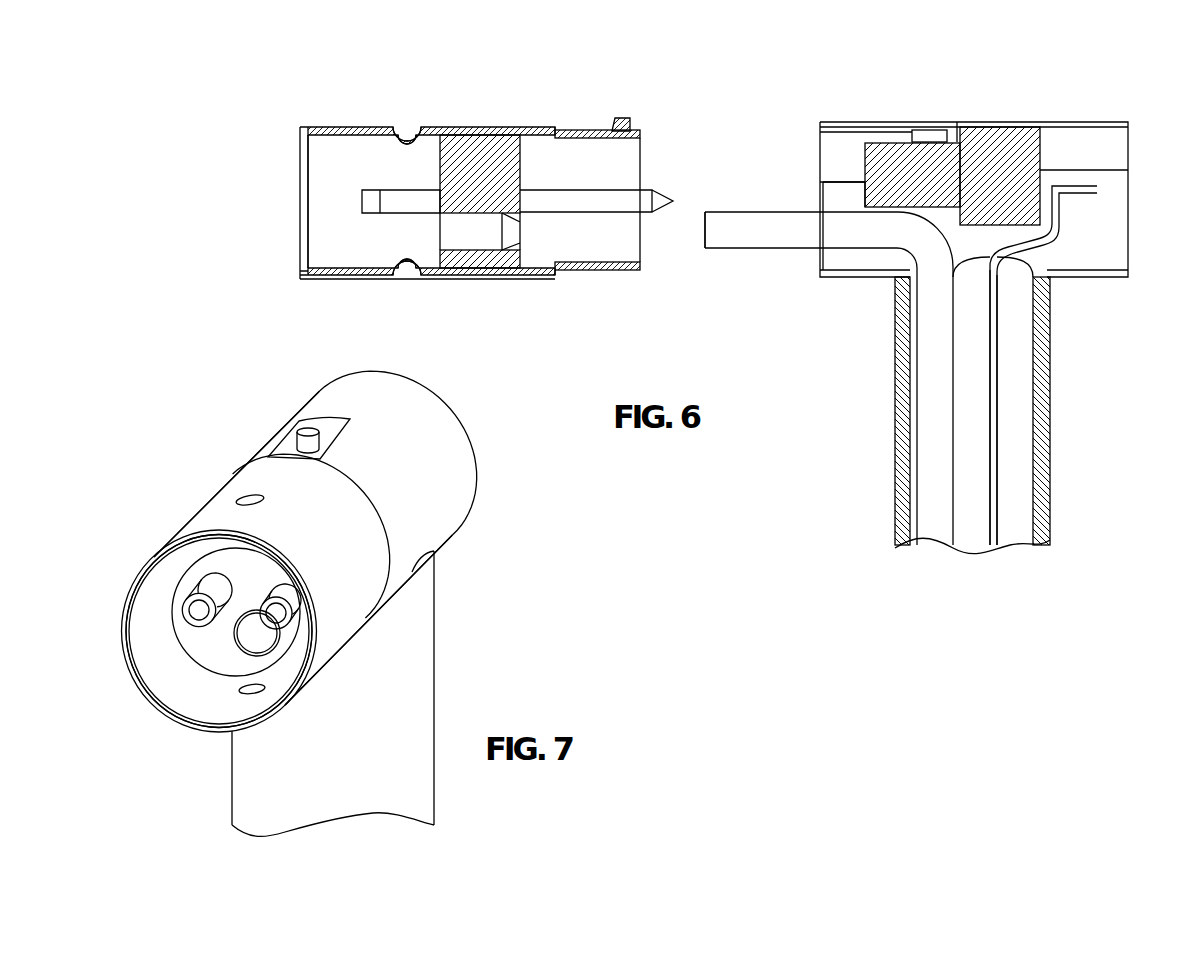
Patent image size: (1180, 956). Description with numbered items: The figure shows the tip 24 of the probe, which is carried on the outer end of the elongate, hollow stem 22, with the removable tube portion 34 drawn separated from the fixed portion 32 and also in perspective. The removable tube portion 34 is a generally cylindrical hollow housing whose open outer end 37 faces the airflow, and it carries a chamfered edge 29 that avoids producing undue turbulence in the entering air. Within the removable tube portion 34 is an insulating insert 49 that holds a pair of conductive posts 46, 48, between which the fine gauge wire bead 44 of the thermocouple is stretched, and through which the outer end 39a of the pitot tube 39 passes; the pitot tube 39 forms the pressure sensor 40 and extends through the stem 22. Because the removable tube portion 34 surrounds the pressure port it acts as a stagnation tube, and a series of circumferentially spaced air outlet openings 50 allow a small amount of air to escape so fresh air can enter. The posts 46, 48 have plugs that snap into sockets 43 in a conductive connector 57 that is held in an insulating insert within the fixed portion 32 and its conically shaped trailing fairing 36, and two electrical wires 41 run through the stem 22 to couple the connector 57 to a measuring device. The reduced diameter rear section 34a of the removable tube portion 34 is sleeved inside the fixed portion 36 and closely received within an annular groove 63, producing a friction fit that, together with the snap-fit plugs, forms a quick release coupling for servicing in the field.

In FIG. 6, the stem 22 is at (1013, 382).
In FIG. 7, the stem 22 is at (402, 782).
In FIG. 7, the tip 24 is at (172, 463).
In FIG. 7, the chamfered edge 29 is at (137, 633).
In FIG. 7, the fixed portion 32 is at (427, 484).
In FIG. 6, the removable tube portion 34 is at (335, 158).
In FIG. 7, the removable tube portion 34 is at (340, 597).
In FIG. 6, the rear section 34a is at (580, 130).
In FIG. 6, the trailing fairing 36 is at (1047, 150).
In FIG. 6, the open outer end 37 is at (314, 248).
In FIG. 7, the open outer end 37 is at (176, 709).
In FIG. 6, the pitot tube 39 is at (932, 430).
In FIG. 6, the outer end of pitot tube 39a is at (780, 228).
In FIG. 6, the pressure sensor 40 is at (698, 233).
In FIG. 7, the pressure sensor 40 is at (170, 704).
In FIG. 6, the electrical wires 41 is at (995, 440).
In FIG. 6, the socket 43 is at (838, 192).
In FIG. 7, the wire bead 44 is at (250, 643).
In FIG. 6, the conductive post 46 is at (397, 205).
In FIG. 7, the conductive post 46 is at (192, 607).
In FIG. 7, the conductive post 48 is at (282, 618).
In FIG. 6, the insulating insert 49 is at (472, 240).
In FIG. 7, the insulating insert 49 is at (197, 562).
In FIG. 6, the air outlet openings 50 is at (407, 124).
In FIG. 7, the air outlet openings 50 is at (286, 505).
In FIG. 6, the conductive connector 57 is at (1092, 178).
In FIG. 6, the annular groove 63 is at (888, 122).